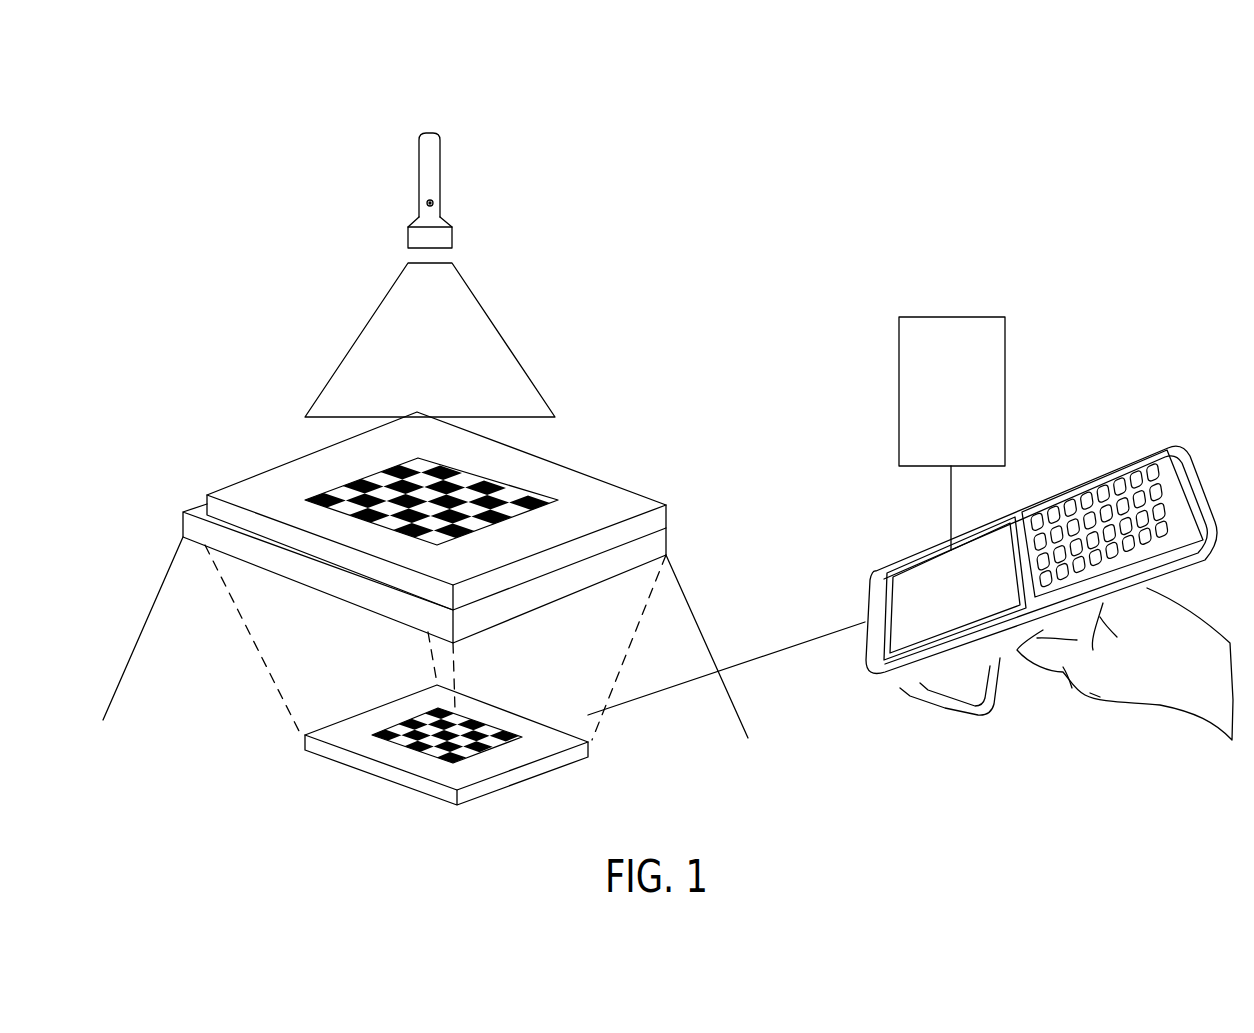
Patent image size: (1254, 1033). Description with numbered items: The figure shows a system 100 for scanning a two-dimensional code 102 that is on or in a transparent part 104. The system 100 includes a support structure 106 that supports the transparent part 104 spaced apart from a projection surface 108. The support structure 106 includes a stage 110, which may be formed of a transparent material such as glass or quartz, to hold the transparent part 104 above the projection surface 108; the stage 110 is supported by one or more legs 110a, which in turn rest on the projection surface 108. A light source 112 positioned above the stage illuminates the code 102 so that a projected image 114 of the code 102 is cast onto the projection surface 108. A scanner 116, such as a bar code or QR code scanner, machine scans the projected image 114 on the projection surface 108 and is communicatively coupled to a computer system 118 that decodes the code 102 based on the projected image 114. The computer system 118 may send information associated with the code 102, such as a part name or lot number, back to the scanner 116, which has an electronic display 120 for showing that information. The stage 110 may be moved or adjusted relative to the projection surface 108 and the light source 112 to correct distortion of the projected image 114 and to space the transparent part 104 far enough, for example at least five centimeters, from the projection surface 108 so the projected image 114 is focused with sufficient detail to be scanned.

The system 100 is at (788, 219).
The code 102 is at (538, 490).
The transparent part 104 is at (507, 462).
The support structure 106 is at (680, 515).
The projection surface 108 is at (527, 755).
The stage 110 is at (562, 583).
The legs 110a is at (126, 667).
The light source 112 is at (441, 175).
The projected image 114 is at (411, 750).
The scanner 116 is at (952, 708).
The computer system 118 is at (968, 401).
The electronic display 120 is at (900, 568).